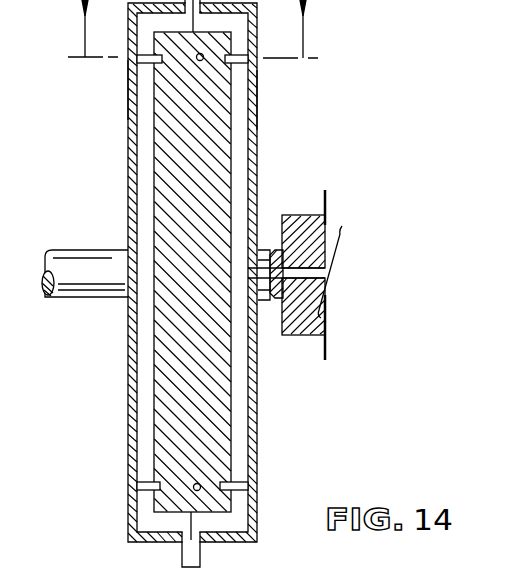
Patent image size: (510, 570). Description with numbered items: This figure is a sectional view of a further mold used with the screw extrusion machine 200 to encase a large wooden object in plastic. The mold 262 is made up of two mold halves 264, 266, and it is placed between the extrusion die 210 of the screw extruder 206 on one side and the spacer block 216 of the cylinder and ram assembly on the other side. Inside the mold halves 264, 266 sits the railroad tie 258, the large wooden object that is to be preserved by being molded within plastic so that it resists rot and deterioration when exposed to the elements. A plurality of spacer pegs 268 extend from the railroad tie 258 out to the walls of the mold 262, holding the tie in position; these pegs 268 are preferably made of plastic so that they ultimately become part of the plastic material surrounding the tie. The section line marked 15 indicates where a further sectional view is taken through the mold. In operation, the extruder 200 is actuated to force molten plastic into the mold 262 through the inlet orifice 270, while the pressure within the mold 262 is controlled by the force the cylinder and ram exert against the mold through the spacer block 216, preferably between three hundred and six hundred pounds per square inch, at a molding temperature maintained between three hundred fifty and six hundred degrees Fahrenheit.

The section line 15- 15 is at (197, 29).
The screw extrusion machine 200 is at (352, 232).
The screw extruder 206 is at (303, 222).
The extrusion die 210 is at (264, 262).
The spacer block 216 is at (74, 254).
The railroad tie 258 is at (185, 195).
The mold 262 is at (120, 108).
The mold half 264 is at (128, 87).
The mold half 266 is at (253, 98).
The spacer pegs 268 is at (162, 60).
The inlet orifice 270 is at (262, 282).